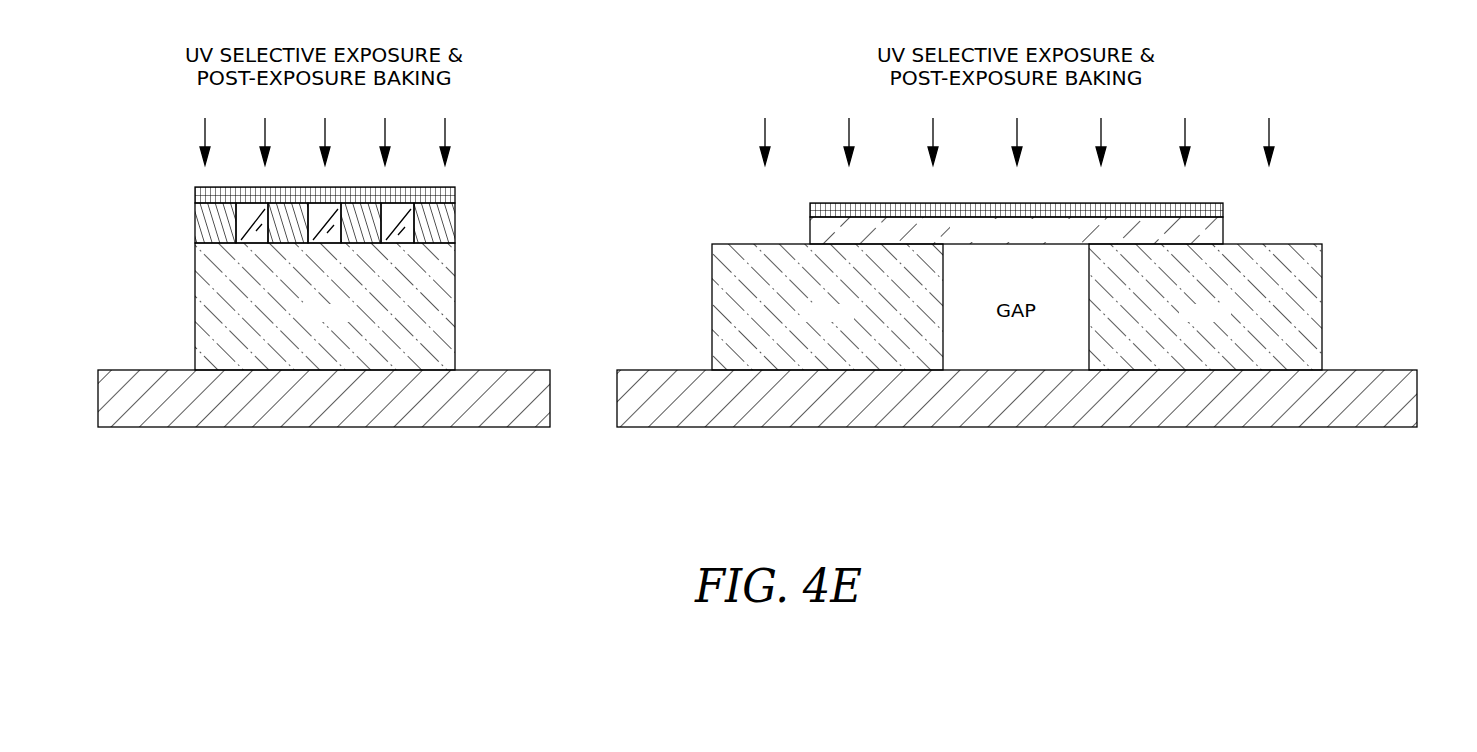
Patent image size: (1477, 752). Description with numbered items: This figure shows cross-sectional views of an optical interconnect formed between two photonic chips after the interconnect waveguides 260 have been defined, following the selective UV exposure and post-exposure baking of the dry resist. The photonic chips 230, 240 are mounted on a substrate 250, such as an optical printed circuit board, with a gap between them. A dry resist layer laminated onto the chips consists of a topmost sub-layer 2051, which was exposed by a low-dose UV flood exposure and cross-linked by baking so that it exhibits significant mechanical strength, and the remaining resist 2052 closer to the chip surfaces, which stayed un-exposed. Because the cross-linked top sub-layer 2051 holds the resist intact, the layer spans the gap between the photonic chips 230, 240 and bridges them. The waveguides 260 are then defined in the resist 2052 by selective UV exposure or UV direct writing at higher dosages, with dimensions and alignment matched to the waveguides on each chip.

The topmost sub-layer of the dry resist layer 2051 is at (455, 187).
The remaining resist 2052 is at (436, 228).
The waveguides 260 is at (247, 226).
The photonic chip 230 is at (446, 308).
The photonic chip 240 is at (1313, 308).
The substrate 250 is at (518, 370).